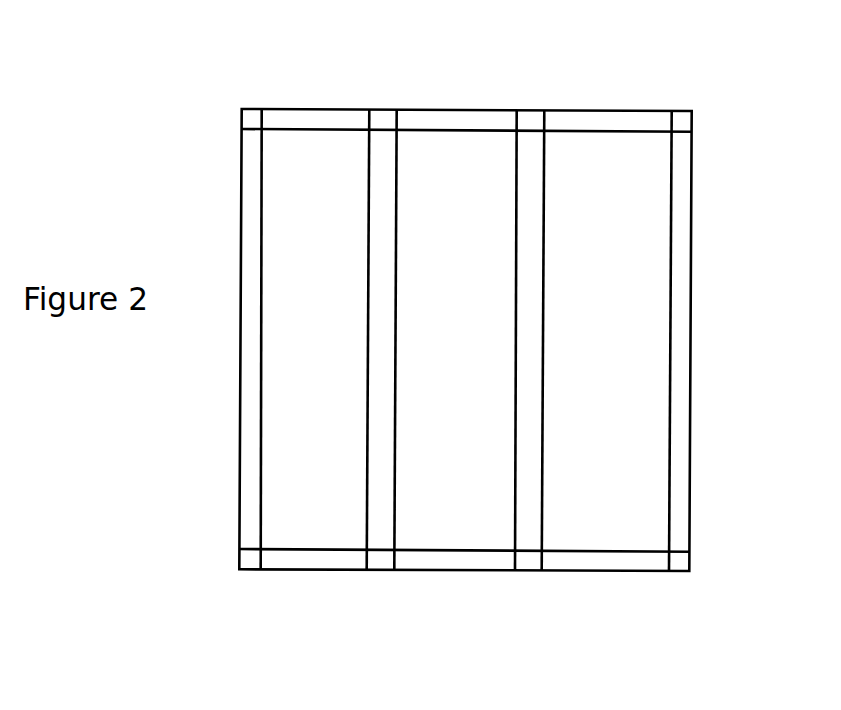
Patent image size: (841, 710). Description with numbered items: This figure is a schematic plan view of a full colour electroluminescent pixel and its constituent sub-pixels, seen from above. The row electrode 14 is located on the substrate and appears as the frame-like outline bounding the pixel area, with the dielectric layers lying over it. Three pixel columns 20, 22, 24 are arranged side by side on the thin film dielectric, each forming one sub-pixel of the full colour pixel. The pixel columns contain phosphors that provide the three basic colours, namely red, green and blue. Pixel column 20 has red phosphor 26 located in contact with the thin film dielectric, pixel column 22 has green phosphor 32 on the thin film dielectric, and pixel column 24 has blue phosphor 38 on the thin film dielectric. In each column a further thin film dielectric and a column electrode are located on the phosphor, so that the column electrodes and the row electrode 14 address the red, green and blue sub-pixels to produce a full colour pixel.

The row electrode 14 is at (682, 255).
The pixel column 20 is at (298, 563).
The pixel column 22 is at (457, 563).
The pixel column 24 is at (595, 563).
The red phosphor 26 is at (314, 92).
The green phosphor 32 is at (461, 93).
The blue phosphor 38 is at (604, 94).